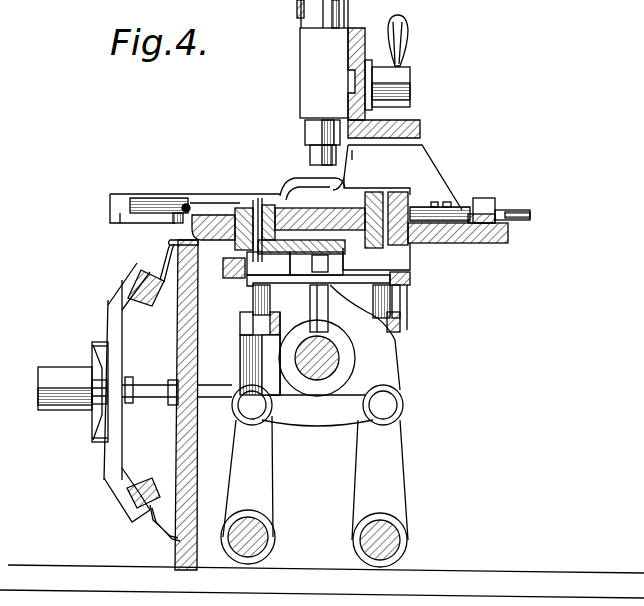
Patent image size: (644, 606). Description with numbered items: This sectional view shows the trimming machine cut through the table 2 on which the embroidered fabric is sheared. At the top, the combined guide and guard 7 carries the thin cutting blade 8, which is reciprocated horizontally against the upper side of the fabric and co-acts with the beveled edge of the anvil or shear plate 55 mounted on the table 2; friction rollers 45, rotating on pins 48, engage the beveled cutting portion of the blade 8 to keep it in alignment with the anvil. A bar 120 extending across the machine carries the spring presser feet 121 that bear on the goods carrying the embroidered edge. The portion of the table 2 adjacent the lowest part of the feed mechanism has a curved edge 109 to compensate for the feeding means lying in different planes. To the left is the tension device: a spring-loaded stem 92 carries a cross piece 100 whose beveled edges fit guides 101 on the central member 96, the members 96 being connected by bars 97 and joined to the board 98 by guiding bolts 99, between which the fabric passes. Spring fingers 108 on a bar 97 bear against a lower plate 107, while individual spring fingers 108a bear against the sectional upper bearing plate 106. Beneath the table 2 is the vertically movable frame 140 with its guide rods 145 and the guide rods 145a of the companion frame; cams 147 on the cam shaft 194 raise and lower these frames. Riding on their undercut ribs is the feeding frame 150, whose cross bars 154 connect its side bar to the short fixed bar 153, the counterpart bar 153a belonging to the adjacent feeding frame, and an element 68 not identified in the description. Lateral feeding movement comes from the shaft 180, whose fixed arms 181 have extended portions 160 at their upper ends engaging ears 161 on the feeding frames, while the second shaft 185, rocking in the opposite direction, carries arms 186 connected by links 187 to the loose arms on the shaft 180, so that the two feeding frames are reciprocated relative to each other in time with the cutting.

The supplemental bed or table 2 is at (510, 237).
The combined guide and guard 7 is at (115, 195).
The cutting blade 8 is at (140, 198).
The friction rollers 45 is at (186, 205).
The pins 48 is at (452, 206).
The anvil or shear plate 55 is at (290, 197).
The bar 68 is at (330, 234).
The stem 92 is at (62, 396).
The members 96 is at (118, 316).
The bars 97 is at (128, 270).
The board 98 is at (198, 320).
The guiding bolts or pins 99 is at (153, 385).
The cross piece 100 is at (98, 368).
The guides 101 is at (94, 344).
The upper bearing member or plate 106 is at (170, 242).
The spring 107 is at (170, 541).
The spring fingers 108 is at (160, 525).
The individual spring fingers 108a is at (166, 270).
The curved edge 109 is at (208, 214).
The bar 120 is at (355, 34).
The spring presser feet 121 is at (308, 180).
The frame 140 is at (412, 278).
The guide rods 145 is at (395, 300).
The guide rods 145a is at (240, 300).
The cams 147 is at (343, 345).
The feeding frame 150 is at (410, 260).
The short fixed bar 153 is at (410, 190).
The housing part 153a is at (375, 188).
The cross bars 154 is at (300, 276).
The extended portions 160 is at (328, 266).
The ears 161 is at (338, 282).
The shaft 180 is at (396, 532).
The arms or levers 181 is at (398, 374).
The shaft 185 is at (262, 530).
The arms or levers 186 is at (270, 463).
The links 187 is at (330, 425).
The cam shaft 194 is at (317, 372).